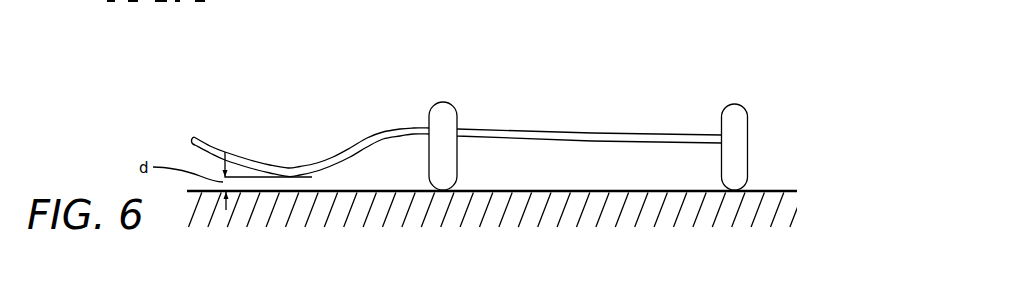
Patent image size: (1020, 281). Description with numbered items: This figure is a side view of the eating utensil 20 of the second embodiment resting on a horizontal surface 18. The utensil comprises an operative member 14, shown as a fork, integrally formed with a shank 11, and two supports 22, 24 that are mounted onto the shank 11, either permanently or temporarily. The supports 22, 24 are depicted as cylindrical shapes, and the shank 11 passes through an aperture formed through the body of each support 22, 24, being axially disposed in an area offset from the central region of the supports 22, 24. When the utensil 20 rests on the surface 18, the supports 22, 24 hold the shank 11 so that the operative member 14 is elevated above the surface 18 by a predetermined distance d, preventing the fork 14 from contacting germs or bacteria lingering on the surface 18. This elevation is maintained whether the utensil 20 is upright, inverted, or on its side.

The shank 11 is at (592, 122).
The operative member 14 is at (277, 137).
The surface 18 is at (780, 190).
The eating utensil 20 is at (720, 61).
The support 22 is at (443, 117).
The support 24 is at (737, 132).